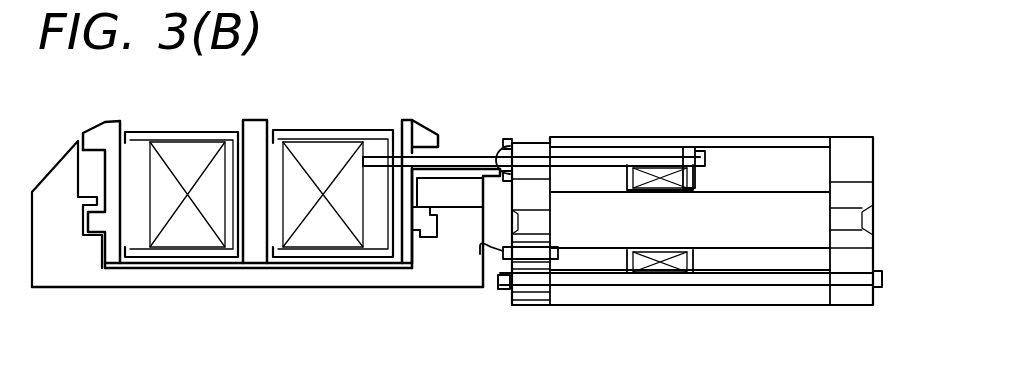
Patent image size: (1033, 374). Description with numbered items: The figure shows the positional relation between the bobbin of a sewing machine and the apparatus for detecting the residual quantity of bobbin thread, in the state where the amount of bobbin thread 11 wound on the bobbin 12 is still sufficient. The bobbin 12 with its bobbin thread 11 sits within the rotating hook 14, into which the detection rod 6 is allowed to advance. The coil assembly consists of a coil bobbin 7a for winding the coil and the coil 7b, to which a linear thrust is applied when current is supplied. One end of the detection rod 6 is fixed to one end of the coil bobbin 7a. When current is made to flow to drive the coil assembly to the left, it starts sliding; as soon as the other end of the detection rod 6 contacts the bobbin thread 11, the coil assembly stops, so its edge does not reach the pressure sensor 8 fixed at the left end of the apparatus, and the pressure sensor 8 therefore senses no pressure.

The rotating hook 14 is at (258, 283).
The bobbin 12 is at (294, 130).
The bobbin thread 11 is at (333, 153).
The detection rod 6 is at (451, 157).
The coil bobbin 7a is at (695, 262).
The coil 7b is at (660, 255).
The pressure sensor 8 is at (505, 262).